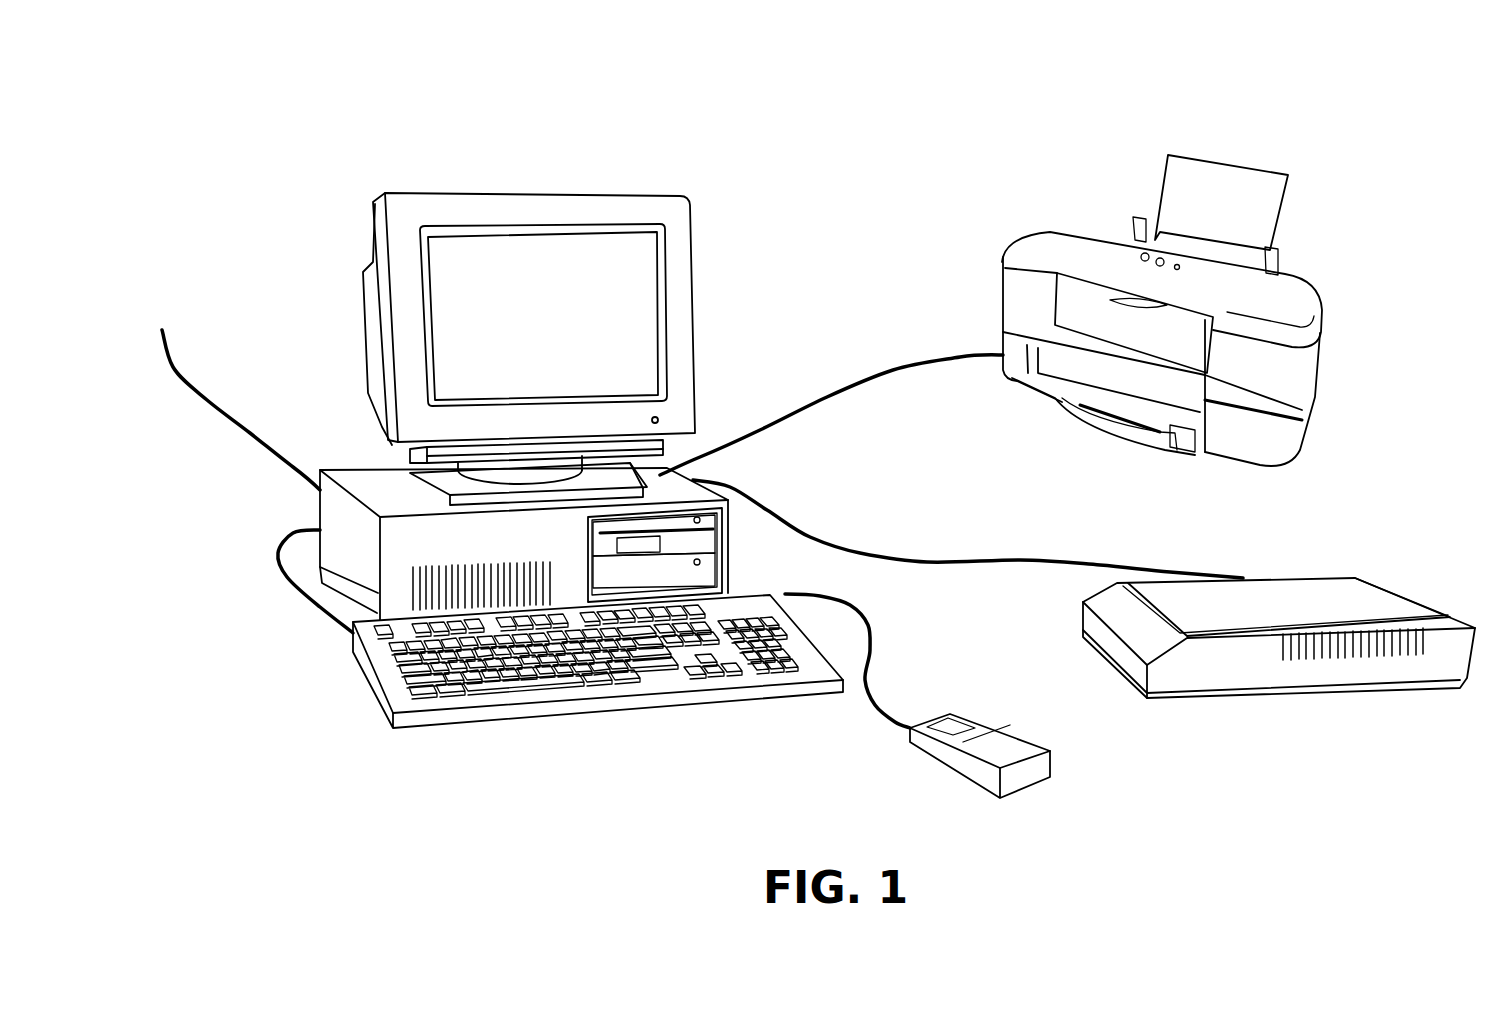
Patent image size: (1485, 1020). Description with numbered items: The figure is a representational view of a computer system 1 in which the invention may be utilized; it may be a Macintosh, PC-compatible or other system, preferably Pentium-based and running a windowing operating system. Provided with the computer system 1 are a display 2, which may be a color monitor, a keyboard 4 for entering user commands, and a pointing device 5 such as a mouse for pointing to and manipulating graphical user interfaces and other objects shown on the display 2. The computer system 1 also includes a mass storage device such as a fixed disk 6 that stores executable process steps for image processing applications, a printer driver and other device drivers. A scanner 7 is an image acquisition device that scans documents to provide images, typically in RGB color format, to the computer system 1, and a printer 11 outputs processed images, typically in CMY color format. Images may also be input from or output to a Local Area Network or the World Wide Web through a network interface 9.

The computer system 1 is at (762, 216).
The display 2 is at (567, 193).
The keyboard 4 is at (467, 697).
The pointing device 5 is at (1025, 787).
The fixed disk 6 is at (710, 563).
The scanner 7 is at (1283, 702).
The network interface 9 is at (243, 433).
The printer 11 is at (1097, 233).